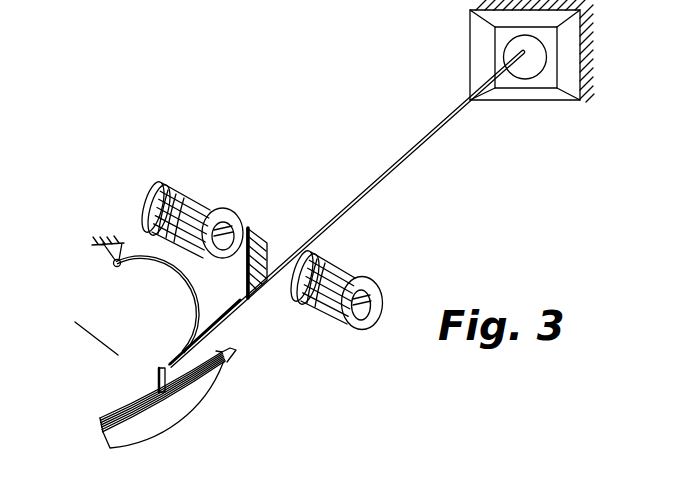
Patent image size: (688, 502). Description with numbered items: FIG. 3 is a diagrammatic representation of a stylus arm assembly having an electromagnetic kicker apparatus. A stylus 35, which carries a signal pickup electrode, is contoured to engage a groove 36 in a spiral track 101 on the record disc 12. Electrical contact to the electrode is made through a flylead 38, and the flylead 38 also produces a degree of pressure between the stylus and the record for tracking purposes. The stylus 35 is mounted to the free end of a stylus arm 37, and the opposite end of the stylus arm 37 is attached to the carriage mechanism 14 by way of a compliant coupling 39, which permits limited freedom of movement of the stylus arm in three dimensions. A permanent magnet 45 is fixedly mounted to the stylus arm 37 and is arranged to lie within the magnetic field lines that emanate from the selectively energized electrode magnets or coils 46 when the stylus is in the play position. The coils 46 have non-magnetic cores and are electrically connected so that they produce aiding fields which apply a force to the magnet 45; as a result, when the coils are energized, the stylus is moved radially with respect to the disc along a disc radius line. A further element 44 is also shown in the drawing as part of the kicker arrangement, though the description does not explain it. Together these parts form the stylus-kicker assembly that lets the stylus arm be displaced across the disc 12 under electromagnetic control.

The magnetic disc 12 is at (226, 365).
The housing 14 is at (585, 72).
The transducer head 35 is at (157, 374).
The recording tracks 36 is at (100, 428).
The actuator arm 37 is at (222, 322).
The disc radius arc 38 is at (195, 299).
The pivot bearing 39 is at (550, 48).
The coils 44 is at (178, 188).
The permanent magnet 45 is at (266, 260).
The coil cores 46 is at (185, 245).
The outer track 101 is at (216, 351).